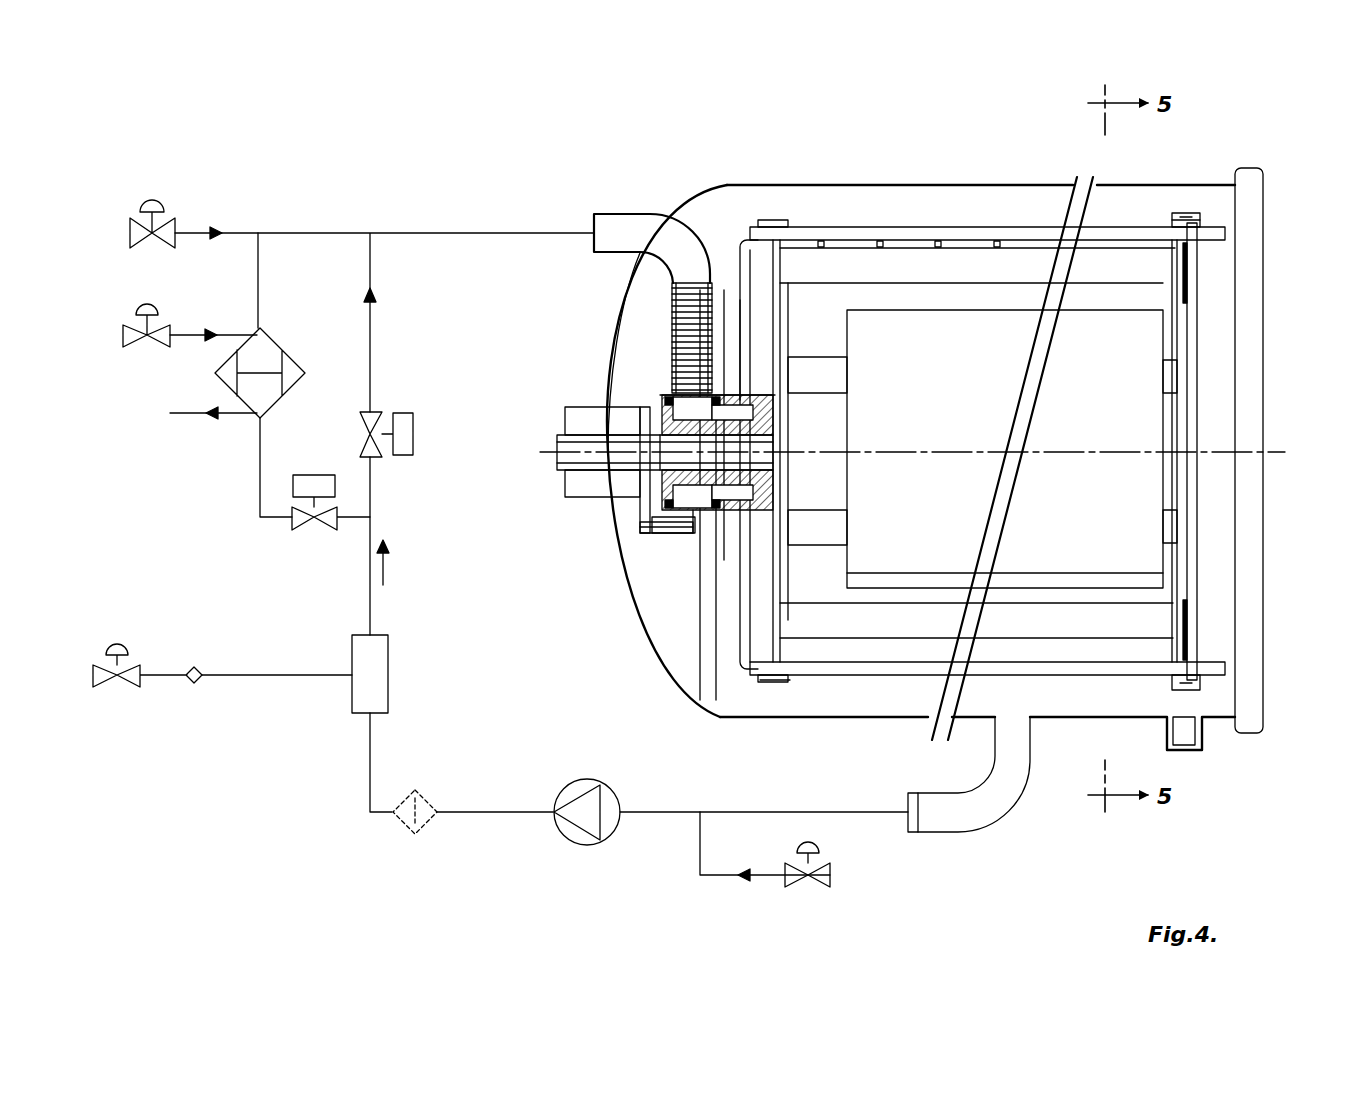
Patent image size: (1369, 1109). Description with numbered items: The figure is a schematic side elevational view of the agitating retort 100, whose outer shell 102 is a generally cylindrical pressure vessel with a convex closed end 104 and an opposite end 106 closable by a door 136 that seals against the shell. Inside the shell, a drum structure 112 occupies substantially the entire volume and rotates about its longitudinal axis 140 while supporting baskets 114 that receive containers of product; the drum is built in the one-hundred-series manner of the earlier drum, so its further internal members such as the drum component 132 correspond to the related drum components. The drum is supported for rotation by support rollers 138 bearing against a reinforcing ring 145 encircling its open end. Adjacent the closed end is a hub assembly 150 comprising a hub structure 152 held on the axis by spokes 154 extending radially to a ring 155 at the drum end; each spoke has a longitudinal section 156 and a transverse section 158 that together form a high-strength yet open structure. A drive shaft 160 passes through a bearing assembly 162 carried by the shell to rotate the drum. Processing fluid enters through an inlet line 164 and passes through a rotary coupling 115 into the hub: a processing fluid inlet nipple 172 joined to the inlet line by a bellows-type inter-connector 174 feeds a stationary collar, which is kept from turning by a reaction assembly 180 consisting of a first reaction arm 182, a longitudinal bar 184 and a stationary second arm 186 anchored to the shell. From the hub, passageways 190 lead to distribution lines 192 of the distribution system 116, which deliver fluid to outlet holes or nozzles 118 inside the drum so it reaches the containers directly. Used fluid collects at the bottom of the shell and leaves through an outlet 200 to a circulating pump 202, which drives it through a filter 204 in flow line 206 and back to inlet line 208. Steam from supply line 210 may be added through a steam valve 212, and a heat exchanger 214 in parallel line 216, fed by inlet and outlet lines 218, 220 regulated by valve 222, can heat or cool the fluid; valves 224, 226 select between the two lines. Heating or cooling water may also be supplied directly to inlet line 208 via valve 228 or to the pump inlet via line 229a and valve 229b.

The agitating retort 100 is at (1000, 128).
The outer shell 102 is at (1035, 185).
The closed end 104 is at (685, 205).
The opposite end 106 is at (1220, 498).
The drum structure 112 is at (1168, 210).
The baskets 114 is at (1140, 302).
The rotary coupling 115 is at (665, 395).
The distribution system 116 is at (886, 218).
The fluid outlet holes or nozzles 118 is at (985, 240).
The support arm 132 is at (820, 283).
The door 136 is at (1262, 225).
The support rollers 138 is at (1195, 735).
The longitudinal axis 140 is at (1282, 452).
The reinforcing ring 145 is at (1205, 222).
The hub assembly 150 is at (700, 620).
The hub structure 152 is at (716, 600).
The spokes 154 is at (720, 395).
The ring 155 is at (778, 686).
The longitudinal section 156 is at (758, 250).
The transverse section 158 is at (762, 240).
The drive shaft 160 is at (572, 435).
The bearing assembly 162 is at (575, 418).
The inlet line 164 is at (612, 218).
The processing fluid inlet nipple 172 is at (675, 360).
The bellows-type inter-connector 174 is at (670, 312).
The reaction assembly 180 is at (668, 540).
The first reaction arm 182 is at (700, 545).
The longitudinal bar 184 is at (668, 535).
The stationary second arm 186 is at (640, 518).
The passageways 190 is at (724, 545).
The distribution lines 192 is at (1105, 230).
The outlet 200 is at (1002, 828).
The circulating pump 202 is at (556, 835).
The filter 204 is at (398, 826).
The flow line 206 is at (370, 750).
The inlet line 208 is at (410, 233).
The steam supply line 210 is at (225, 675).
The steam valve 212 is at (105, 665).
The heat exchanger 214 is at (275, 340).
The line 216 is at (260, 460).
The inlet line 218 is at (192, 335).
The outlet line 220 is at (190, 413).
The valve 222 is at (140, 308).
The valve 224 is at (413, 420).
The valve 226 is at (292, 530).
The valve 228 is at (145, 200).
The line 229a is at (700, 880).
The valve 229b is at (810, 887).